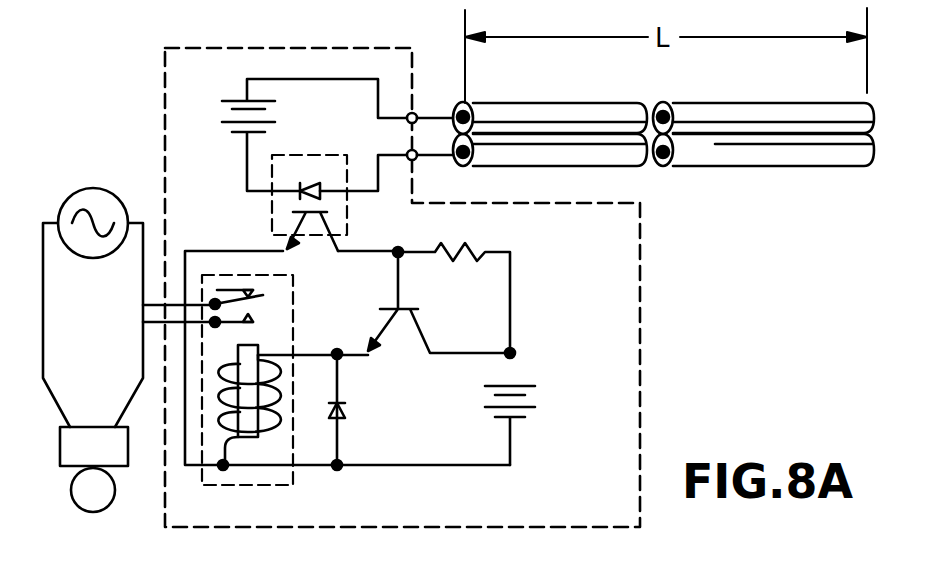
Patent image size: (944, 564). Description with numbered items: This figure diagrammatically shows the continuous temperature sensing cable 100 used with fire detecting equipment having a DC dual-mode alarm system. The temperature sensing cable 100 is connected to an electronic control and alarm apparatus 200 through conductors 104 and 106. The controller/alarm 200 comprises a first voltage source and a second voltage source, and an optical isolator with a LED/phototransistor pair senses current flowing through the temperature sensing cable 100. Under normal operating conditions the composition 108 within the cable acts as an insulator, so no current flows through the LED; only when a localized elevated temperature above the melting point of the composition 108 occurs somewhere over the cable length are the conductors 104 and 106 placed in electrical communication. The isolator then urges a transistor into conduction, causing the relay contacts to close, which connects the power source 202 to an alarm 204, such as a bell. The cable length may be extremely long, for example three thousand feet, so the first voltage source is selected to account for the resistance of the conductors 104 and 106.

The temperature sensing cable 100 is at (598, 168).
The conductor 104 is at (450, 113).
The conductor 106 is at (433, 158).
The composition 108 is at (468, 136).
The electronic control and alarm apparatus 200 is at (640, 327).
The power source 202 is at (108, 187).
The alarm 204 is at (58, 458).